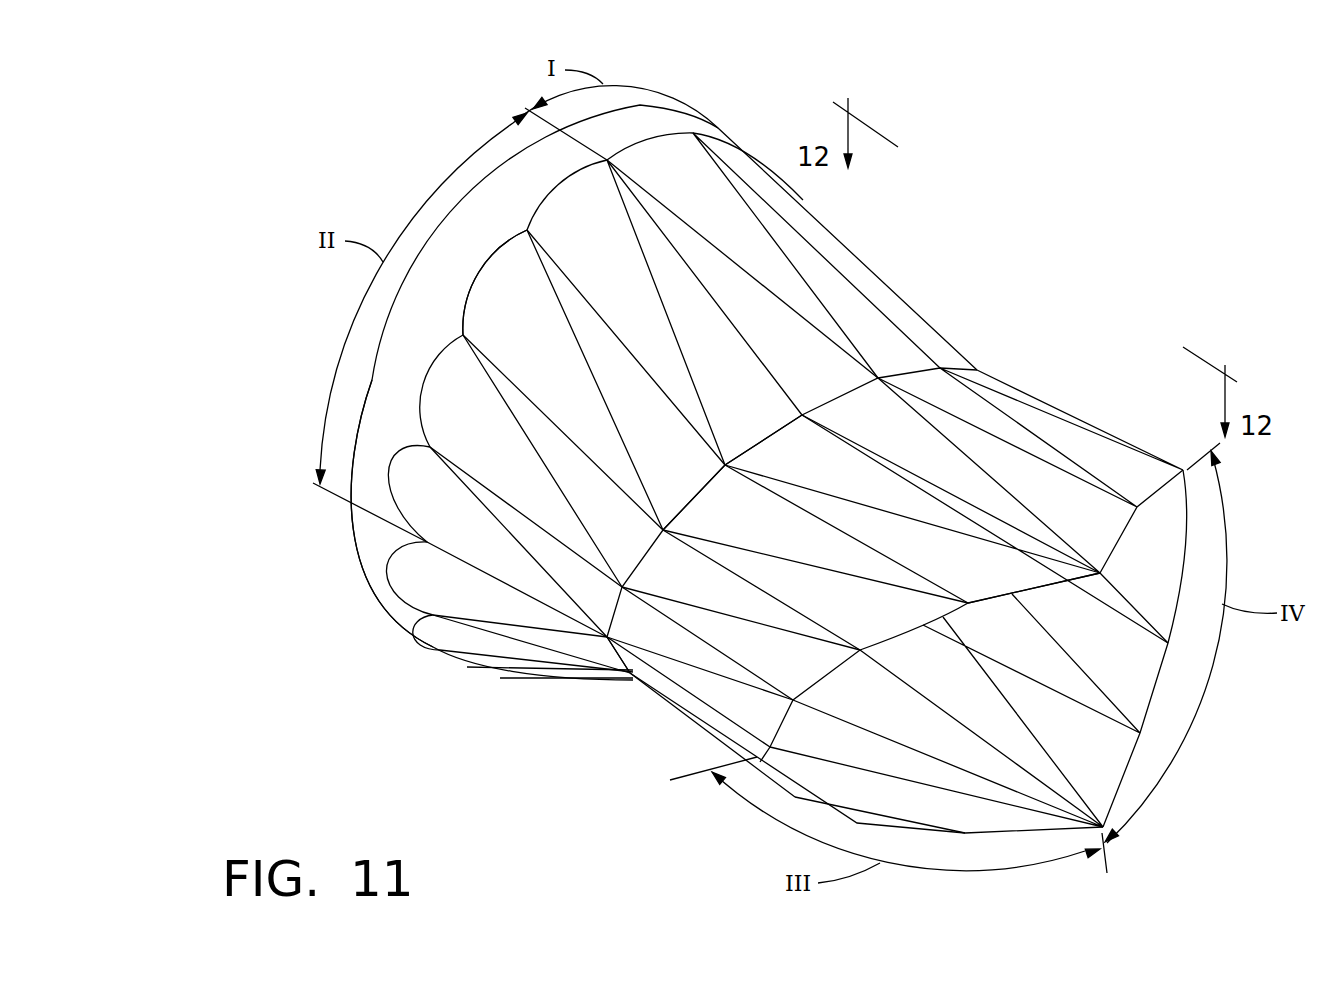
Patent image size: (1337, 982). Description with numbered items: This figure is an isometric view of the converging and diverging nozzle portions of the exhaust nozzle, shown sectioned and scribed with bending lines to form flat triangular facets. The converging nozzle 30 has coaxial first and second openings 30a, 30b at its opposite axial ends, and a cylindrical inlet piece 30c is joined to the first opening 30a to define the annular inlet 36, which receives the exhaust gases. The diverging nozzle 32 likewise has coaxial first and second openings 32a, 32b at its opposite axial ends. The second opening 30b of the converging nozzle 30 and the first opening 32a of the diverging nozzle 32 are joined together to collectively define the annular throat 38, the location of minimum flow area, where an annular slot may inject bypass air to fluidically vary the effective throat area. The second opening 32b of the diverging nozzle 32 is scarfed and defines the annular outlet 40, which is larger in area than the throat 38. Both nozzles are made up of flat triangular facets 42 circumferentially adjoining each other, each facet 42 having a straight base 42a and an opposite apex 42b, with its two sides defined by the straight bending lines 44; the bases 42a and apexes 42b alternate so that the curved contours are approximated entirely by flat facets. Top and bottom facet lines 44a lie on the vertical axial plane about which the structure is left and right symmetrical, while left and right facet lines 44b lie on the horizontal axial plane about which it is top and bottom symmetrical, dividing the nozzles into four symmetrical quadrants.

The converging nozzle 30 is at (887, 233).
The first opening of converging nozzle 30a is at (710, 123).
The second opening of converging nozzle 30b is at (612, 682).
The cylindrical inlet piece 30c is at (515, 234).
The diverging nozzle 32 is at (1098, 343).
The first opening of diverging nozzle 32a is at (631, 697).
The second opening of diverging nozzle 32b is at (813, 808).
The annular inlet 36 is at (337, 521).
The annular throat 38 is at (977, 366).
The annular outlet 40 is at (1141, 679).
The triangular facet 42 is at (553, 368).
The base of facet 42a is at (482, 273).
The apex of facet 42b is at (668, 530).
The bending line 44 is at (584, 297).
The facet line on vertical axial plane 44a is at (704, 238).
The facet line on horizontal axial plane 44b is at (476, 563).